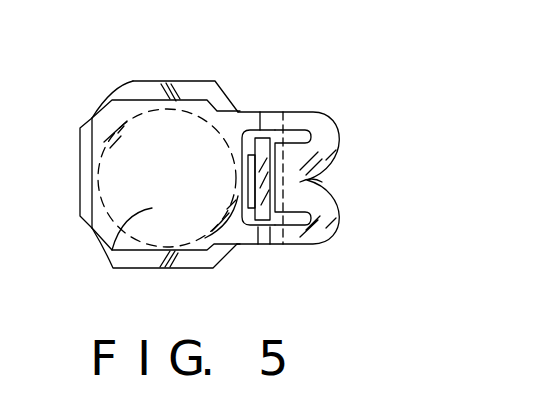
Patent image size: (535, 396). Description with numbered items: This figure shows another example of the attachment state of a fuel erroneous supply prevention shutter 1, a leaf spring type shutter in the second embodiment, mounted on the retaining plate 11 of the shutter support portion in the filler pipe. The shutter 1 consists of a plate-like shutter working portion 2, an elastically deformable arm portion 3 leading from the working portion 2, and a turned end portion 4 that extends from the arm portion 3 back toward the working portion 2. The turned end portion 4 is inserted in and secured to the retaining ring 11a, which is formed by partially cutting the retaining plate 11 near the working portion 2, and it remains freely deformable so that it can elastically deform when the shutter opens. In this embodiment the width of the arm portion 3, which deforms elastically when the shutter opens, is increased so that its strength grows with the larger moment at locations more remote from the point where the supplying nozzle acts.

The fuel erroneous supply prevention shutter 1 is at (127, 79).
The retaining plate 11 is at (195, 65).
The retaining ring 11a is at (265, 228).
The shutter working portion 2 is at (122, 238).
The arm portion 3 is at (298, 122).
The turned end portion 4 is at (306, 182).